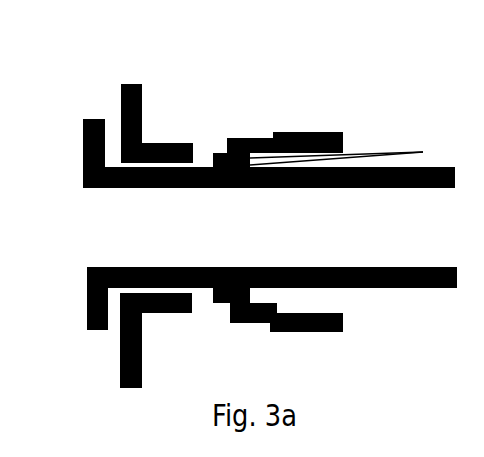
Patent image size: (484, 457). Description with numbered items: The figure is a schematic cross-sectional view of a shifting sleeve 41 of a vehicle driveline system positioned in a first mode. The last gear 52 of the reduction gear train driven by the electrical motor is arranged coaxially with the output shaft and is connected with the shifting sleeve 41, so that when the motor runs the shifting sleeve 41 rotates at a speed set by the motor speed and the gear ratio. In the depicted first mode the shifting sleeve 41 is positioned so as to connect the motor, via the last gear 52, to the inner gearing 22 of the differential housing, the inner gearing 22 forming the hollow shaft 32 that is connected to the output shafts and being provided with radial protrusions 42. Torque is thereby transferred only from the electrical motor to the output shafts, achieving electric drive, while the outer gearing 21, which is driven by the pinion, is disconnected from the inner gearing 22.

The outer gearing 21 is at (153, 78).
The inner gearing 22 is at (83, 133).
The hollow shaft 32 is at (94, 143).
The shifting sleeve 41 is at (255, 137).
The radial protrusions 42 is at (349, 157).
The last gear 52 is at (312, 130).